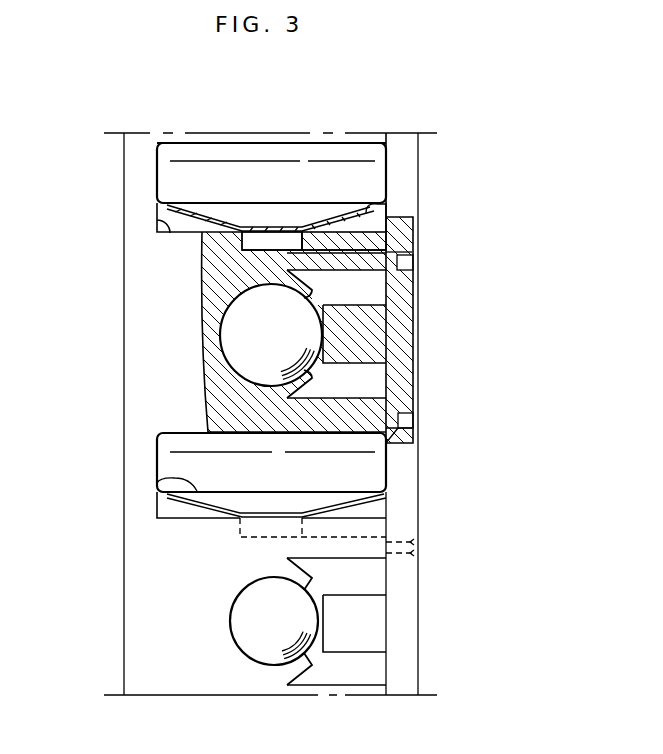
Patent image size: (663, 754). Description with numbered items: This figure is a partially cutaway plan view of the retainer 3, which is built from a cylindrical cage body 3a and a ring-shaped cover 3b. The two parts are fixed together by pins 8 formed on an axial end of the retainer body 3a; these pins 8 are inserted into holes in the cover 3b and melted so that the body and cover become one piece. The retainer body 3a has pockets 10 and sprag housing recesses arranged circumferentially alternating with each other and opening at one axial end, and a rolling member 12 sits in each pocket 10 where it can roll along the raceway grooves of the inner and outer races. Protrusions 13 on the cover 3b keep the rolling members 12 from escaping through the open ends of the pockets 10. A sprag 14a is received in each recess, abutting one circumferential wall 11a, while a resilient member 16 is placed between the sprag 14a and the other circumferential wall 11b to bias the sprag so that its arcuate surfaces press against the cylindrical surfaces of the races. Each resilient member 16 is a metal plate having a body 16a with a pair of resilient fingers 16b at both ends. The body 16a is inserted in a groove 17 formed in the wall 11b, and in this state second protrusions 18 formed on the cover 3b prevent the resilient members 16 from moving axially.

The retainer 3 is at (122, 170).
The cage body 3a is at (130, 587).
The cover 3b is at (410, 472).
The pins 8 is at (410, 423).
The pockets 10 is at (230, 327).
The wall 11a is at (256, 152).
The wall 11b is at (157, 220).
The rolling member 12 is at (234, 350).
The protrusions 13 is at (353, 637).
The sprag 14a is at (377, 173).
The resilient member 16 is at (283, 230).
The body 16a is at (257, 238).
The resilient fingers 16b is at (363, 208).
The groove 17 is at (385, 267).
The second protrusions 18 is at (367, 238).